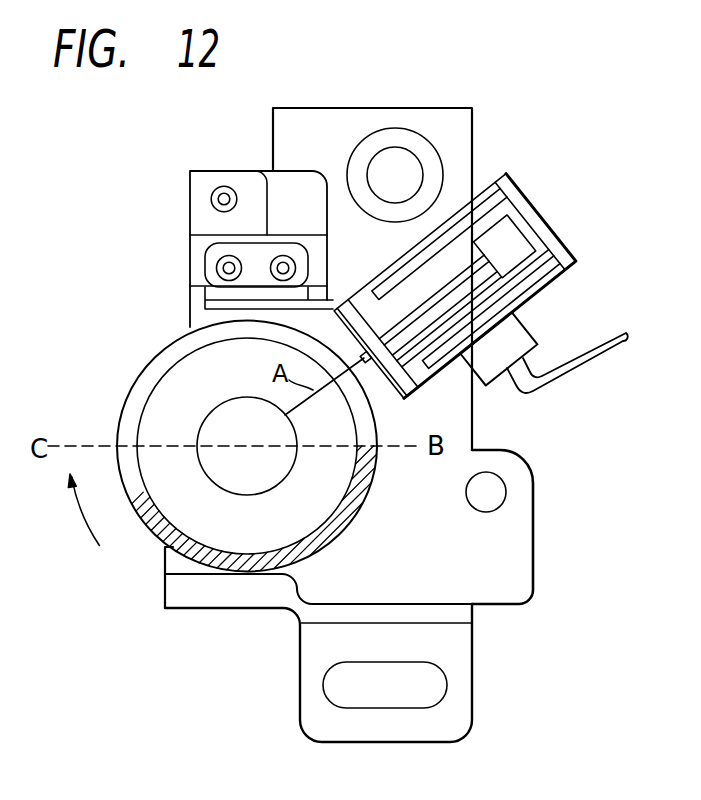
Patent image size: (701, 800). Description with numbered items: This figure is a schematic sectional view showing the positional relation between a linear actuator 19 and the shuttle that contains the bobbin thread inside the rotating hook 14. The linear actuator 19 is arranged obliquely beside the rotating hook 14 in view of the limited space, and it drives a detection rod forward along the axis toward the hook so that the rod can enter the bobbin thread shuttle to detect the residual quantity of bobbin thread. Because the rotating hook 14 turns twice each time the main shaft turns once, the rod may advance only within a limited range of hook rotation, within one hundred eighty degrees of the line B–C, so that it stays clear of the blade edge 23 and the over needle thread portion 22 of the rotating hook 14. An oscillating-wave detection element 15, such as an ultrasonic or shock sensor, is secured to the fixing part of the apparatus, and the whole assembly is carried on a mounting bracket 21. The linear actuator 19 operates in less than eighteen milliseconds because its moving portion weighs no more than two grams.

The rotating hook 14 is at (264, 535).
The oscillating-wave detection element 15 is at (530, 332).
The linear actuator 19 is at (530, 203).
The mounting bracket 21 is at (535, 518).
The over needle thread portion 22 is at (170, 552).
The blade edge 23 is at (117, 445).